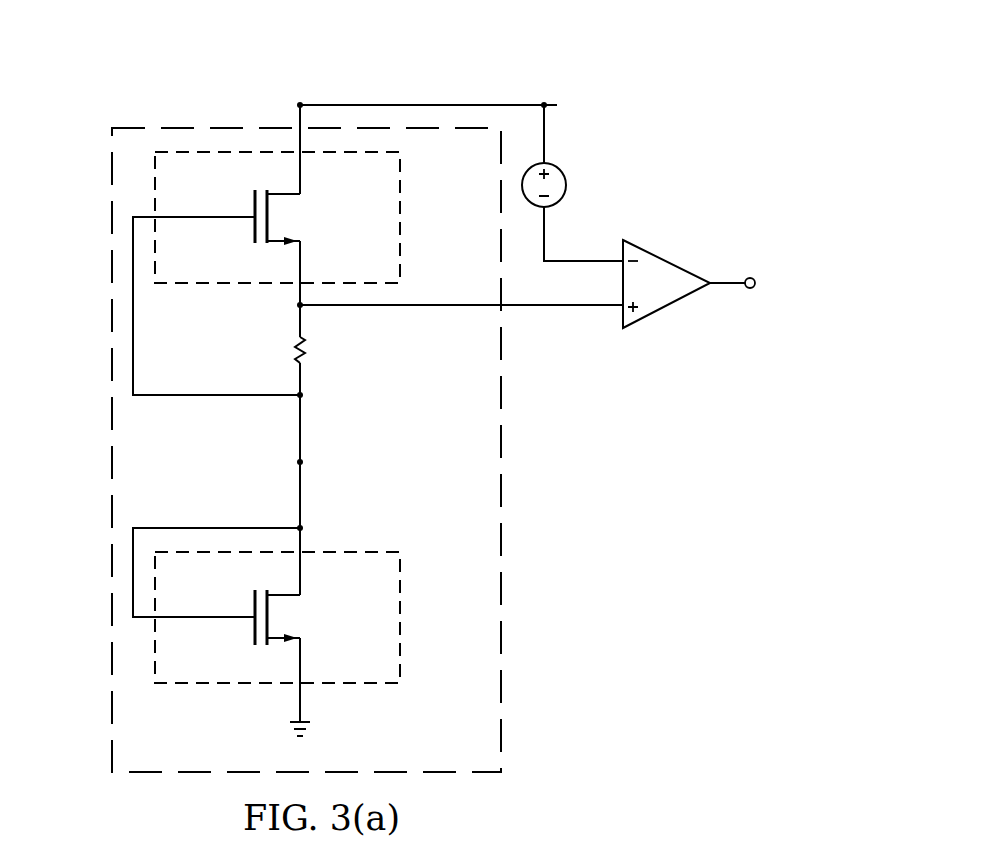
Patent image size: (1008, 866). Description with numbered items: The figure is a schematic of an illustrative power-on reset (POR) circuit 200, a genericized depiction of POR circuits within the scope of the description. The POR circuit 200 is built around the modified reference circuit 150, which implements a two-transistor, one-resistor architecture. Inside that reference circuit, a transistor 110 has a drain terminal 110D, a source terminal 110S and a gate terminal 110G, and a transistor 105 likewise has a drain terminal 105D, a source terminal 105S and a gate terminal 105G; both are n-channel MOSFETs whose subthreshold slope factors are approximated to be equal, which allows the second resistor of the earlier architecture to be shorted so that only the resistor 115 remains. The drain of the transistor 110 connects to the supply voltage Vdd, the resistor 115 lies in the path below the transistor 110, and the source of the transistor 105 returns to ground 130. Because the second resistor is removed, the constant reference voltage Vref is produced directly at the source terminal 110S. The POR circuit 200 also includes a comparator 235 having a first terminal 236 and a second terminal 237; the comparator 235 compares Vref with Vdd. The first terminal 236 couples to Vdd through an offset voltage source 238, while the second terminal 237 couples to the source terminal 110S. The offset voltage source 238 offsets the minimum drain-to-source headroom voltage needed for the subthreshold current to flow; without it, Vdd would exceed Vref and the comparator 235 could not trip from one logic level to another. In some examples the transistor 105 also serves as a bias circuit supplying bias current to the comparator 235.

The POR circuit 200 is at (188, 80).
The modified reference circuit 150 is at (108, 395).
The transistor 110 is at (405, 205).
The gate terminal 110G is at (254, 205).
The drain terminal 110D is at (288, 195).
The source terminal 110S is at (282, 226).
The resistor 115 is at (296, 350).
The transistor 105 is at (405, 632).
The gate terminal 105G is at (254, 626).
The drain terminal 105D is at (288, 595).
The source terminal 105S is at (282, 626).
The ground 130 is at (294, 730).
The offset voltage source 238 is at (580, 148).
The comparator 235 is at (669, 260).
The first terminal 236 is at (610, 259).
The second terminal 237 is at (610, 310).